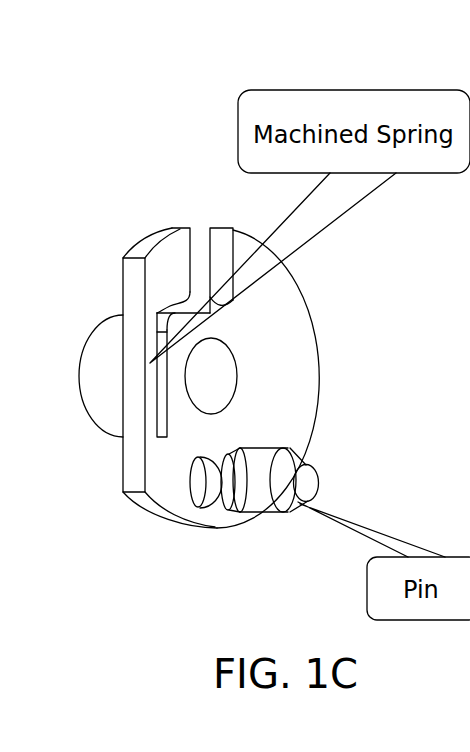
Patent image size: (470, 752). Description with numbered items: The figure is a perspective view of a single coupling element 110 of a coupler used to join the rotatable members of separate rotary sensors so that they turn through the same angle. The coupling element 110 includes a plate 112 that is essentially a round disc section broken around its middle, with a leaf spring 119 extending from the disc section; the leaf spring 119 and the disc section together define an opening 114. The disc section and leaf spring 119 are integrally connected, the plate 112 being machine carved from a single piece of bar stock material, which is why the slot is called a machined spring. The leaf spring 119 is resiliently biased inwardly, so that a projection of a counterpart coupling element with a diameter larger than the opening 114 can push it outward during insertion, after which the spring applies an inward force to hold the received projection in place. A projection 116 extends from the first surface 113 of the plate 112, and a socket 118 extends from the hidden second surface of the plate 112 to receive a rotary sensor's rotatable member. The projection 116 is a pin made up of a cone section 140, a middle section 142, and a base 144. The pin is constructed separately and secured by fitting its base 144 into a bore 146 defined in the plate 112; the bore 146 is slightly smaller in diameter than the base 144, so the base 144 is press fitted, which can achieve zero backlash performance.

The coupling element 110 is at (122, 243).
The plate 112 is at (255, 238).
The first surface 113 is at (290, 308).
The opening 114 is at (197, 229).
The projection 116 is at (307, 465).
The socket 118 is at (104, 437).
The leaf spring 119 is at (162, 258).
The cone section 140 is at (339, 523).
The middle section 142 is at (263, 517).
The base 144 is at (230, 508).
The bore 146 is at (198, 490).